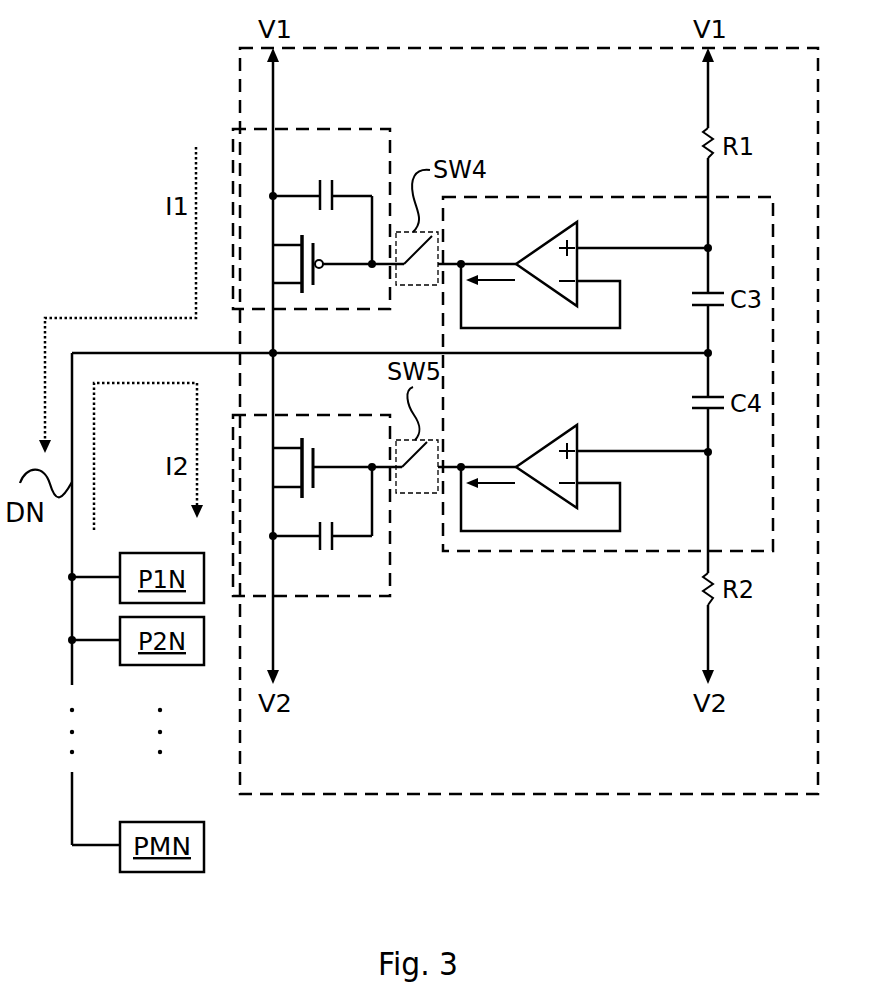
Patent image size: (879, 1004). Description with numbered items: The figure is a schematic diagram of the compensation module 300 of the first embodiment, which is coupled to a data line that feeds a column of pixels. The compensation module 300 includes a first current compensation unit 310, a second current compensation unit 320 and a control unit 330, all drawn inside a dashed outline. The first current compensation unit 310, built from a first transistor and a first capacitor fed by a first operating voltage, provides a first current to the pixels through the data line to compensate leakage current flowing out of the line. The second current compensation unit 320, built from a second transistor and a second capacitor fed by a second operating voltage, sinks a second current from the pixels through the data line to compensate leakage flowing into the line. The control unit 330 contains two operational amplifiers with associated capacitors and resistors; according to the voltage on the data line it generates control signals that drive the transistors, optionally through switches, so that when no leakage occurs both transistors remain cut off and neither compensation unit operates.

The compensation module 300 is at (207, 31).
The first current compensation unit 310 is at (390, 141).
The second current compensation unit 320 is at (337, 596).
The control unit 330 is at (603, 552).